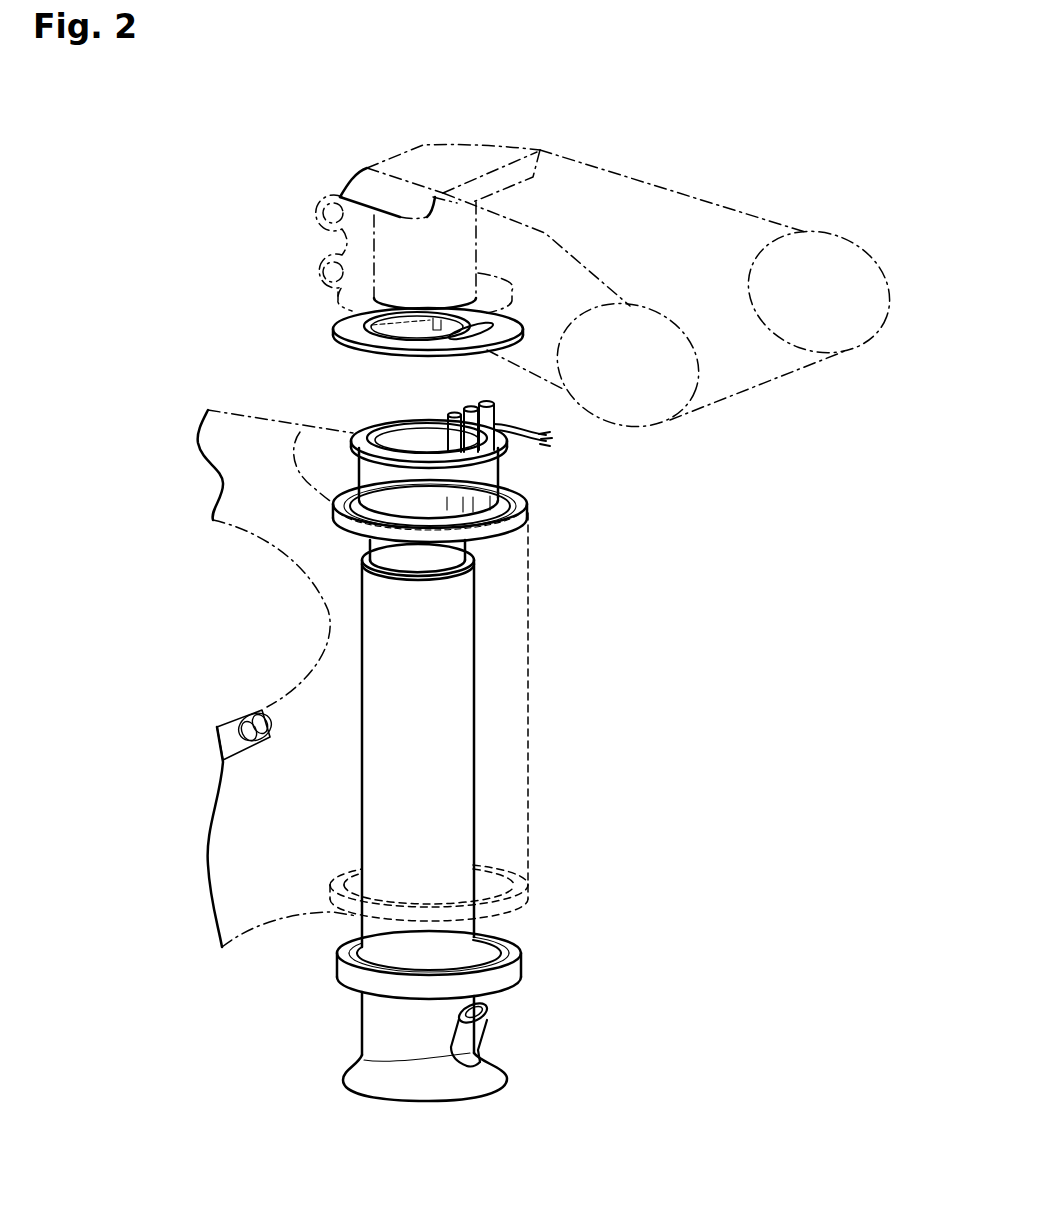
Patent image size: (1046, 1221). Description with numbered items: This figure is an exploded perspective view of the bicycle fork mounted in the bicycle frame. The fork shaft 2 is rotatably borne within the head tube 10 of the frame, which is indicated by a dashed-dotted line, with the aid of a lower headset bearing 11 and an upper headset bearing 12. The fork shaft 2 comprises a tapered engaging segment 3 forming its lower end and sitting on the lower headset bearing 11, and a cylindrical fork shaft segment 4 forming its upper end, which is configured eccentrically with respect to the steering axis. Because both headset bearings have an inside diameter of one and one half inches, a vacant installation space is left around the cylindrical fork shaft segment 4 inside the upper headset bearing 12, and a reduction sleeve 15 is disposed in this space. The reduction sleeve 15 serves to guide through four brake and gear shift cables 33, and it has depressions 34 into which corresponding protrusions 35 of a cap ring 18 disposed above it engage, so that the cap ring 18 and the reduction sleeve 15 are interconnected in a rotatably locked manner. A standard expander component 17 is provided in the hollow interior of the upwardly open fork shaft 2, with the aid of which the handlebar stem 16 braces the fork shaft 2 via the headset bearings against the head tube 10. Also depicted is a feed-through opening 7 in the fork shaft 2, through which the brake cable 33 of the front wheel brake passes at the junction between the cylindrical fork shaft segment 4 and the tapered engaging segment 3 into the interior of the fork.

The fork shaft 2 is at (360, 1058).
The engaging segment 3 is at (487, 1077).
The cylindrical fork shaft segment 4 is at (450, 658).
The feed-through opening 7 is at (470, 1032).
The head tube 10 is at (528, 783).
The lower headset bearing 11 is at (513, 968).
The upper headset bearing 12 is at (510, 520).
The reduction sleeve 15 is at (485, 470).
The handlebar stem 16 is at (678, 215).
The expander component 17 is at (453, 552).
The cap ring 18 is at (355, 328).
The brake and/or gear shift cables 33 is at (514, 426).
The depressions 34 is at (383, 436).
The protrusions 35 is at (440, 328).